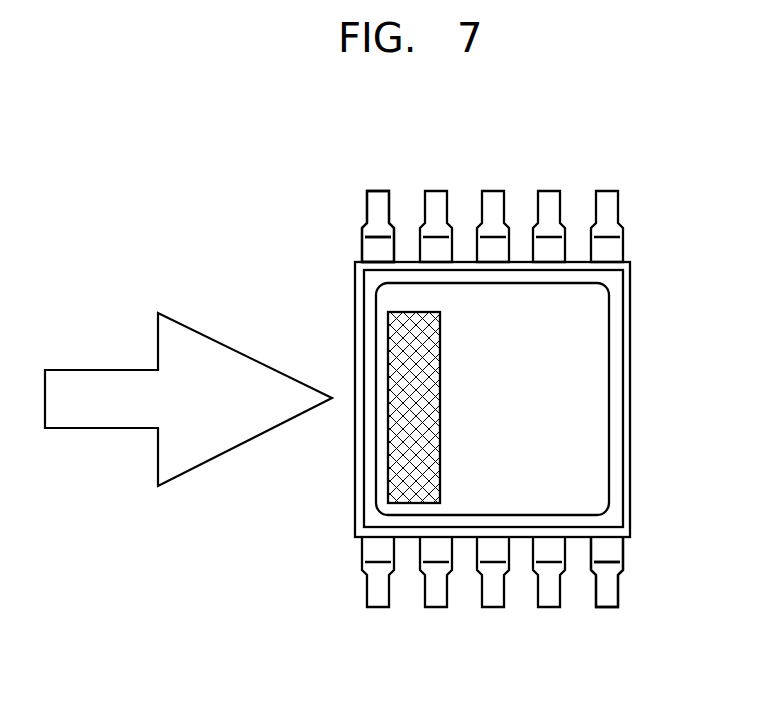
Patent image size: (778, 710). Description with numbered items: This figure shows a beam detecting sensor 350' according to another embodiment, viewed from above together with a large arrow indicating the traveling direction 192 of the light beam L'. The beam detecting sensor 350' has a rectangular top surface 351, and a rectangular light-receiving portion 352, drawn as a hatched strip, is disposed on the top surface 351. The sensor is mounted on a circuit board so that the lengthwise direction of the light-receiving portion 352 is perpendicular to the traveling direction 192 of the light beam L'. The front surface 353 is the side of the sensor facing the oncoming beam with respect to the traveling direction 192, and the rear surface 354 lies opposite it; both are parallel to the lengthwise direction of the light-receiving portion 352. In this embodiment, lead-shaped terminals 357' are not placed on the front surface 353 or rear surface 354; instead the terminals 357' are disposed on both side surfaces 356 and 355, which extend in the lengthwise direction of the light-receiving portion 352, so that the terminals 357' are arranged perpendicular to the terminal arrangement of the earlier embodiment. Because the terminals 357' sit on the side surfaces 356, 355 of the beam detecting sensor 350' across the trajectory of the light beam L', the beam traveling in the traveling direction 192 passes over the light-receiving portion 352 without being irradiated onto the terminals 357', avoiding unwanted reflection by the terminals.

The traveling direction 192 is at (73, 375).
The beam detecting sensor 350' is at (499, 388).
The top surface 351 is at (600, 400).
The light-receiving portion 352 is at (400, 477).
The front surface 353 is at (353, 440).
The rear surface 354 is at (632, 483).
The side surface 355 is at (520, 543).
The side surface 356 is at (362, 260).
The terminals 357' is at (492, 399).